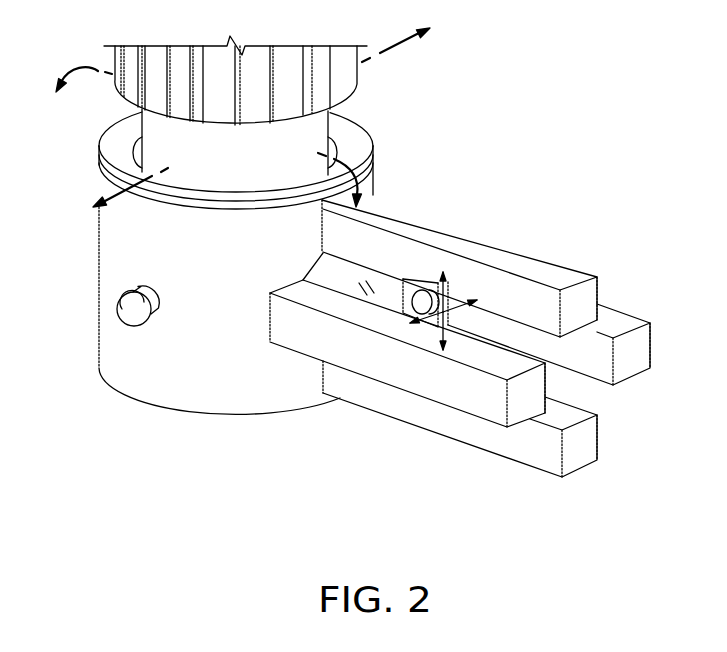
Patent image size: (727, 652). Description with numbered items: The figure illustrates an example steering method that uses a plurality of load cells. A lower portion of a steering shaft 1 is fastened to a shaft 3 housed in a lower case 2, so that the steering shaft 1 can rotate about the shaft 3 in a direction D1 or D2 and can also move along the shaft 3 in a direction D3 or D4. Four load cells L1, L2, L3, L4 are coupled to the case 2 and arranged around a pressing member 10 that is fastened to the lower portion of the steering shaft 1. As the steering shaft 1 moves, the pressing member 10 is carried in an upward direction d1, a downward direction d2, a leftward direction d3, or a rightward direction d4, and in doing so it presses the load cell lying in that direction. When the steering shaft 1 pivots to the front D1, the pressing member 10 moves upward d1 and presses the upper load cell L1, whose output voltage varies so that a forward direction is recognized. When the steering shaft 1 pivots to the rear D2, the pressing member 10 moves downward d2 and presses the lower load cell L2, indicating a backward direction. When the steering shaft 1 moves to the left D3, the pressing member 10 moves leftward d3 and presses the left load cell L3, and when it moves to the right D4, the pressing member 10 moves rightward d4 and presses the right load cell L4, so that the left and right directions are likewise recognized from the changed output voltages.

The steering shaft 1 is at (177, 142).
The lower case 2 is at (200, 385).
The shaft 3 is at (130, 312).
The pressing member 10 is at (390, 288).
The upper load cell L1 is at (558, 275).
The lower load cell L2 is at (582, 448).
The left load cell L3 is at (480, 407).
The right load cell L4 is at (618, 318).
The upward direction d1 is at (444, 272).
The downward direction d2 is at (445, 351).
The leftward direction d3 is at (422, 330).
The rightward direction d4 is at (471, 300).
The front pivot direction D1 is at (76, 95).
The rear pivot direction D2 is at (343, 165).
The left movement direction D3 is at (111, 268).
The right movement direction D4 is at (414, 36).